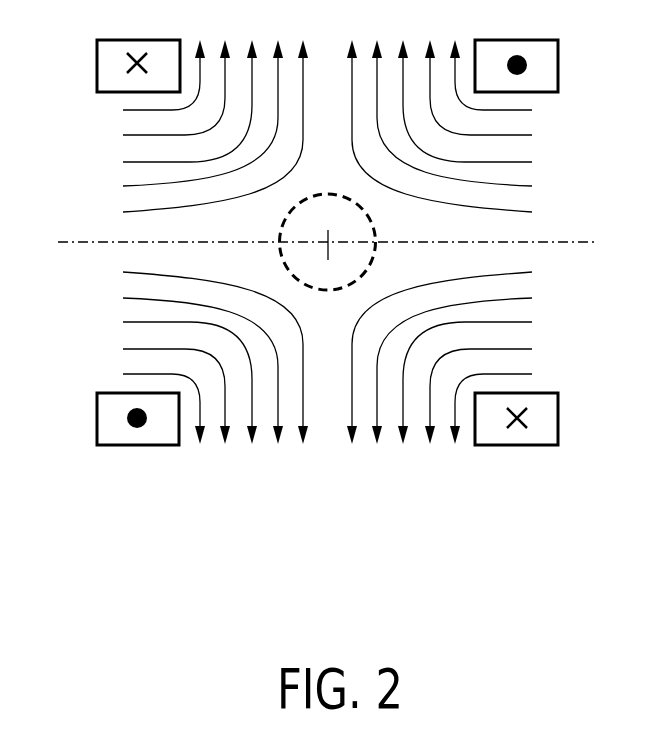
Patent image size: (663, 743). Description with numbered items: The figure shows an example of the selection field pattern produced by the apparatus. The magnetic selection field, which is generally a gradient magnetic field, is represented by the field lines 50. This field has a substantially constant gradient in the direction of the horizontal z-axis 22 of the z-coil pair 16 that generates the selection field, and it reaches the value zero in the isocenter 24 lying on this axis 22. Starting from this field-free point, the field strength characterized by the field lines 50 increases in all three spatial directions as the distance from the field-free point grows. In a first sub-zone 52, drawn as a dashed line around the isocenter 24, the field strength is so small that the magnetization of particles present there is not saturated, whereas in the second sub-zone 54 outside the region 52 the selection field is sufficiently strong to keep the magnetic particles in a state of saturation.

The z-coil pair 16 is at (103, 62).
The z-axis 22 is at (577, 240).
The isocenter 24 is at (328, 243).
The field lines 50 is at (133, 160).
The first sub-zone 52 is at (376, 230).
The second sub-zone 54 is at (132, 324).